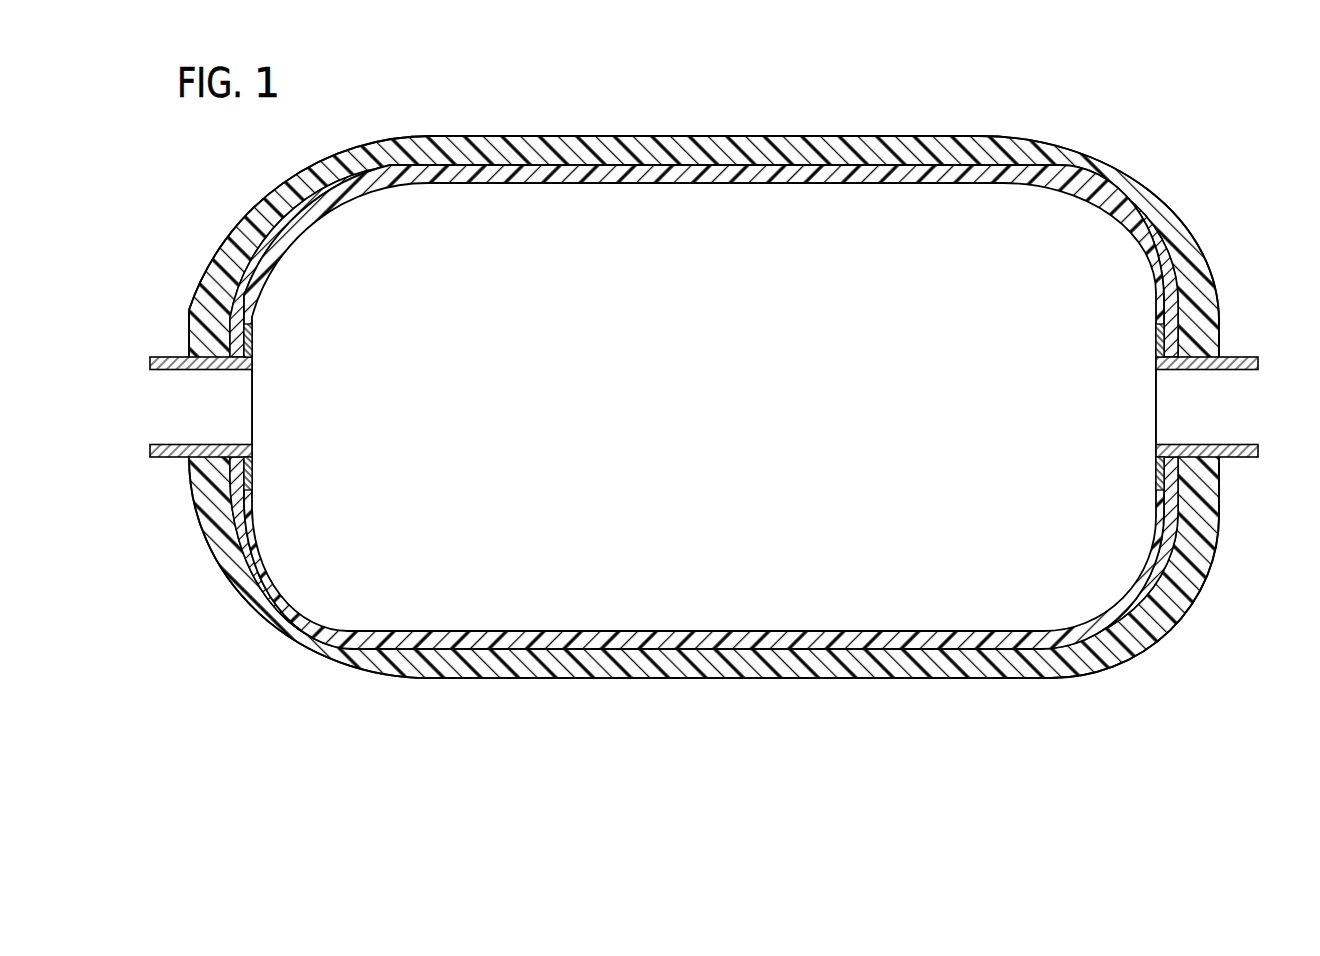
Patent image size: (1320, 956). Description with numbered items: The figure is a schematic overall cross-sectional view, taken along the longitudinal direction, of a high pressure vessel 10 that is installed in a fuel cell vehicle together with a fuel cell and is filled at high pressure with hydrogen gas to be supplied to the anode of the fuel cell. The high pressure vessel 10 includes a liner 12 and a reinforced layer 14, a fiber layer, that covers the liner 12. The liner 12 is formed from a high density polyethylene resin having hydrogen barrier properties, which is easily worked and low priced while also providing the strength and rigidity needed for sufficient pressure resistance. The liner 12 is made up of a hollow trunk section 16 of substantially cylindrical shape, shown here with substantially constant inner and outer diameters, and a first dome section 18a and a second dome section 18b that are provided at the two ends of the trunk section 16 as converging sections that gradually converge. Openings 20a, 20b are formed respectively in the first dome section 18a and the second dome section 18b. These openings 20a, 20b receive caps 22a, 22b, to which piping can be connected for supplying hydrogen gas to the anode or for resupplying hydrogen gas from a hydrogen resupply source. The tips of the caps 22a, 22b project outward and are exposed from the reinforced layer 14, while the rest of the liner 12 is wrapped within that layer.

The high pressure vessel 10 is at (1184, 101).
The liner 12 is at (929, 188).
The reinforced layer 14 is at (963, 152).
The trunk section 16 is at (680, 176).
The first dome section 18a is at (286, 227).
The second dome section 18b is at (1143, 245).
The opening 20a is at (238, 360).
The opening 20b is at (1171, 360).
The cap 22a is at (163, 357).
The cap 22b is at (1245, 357).